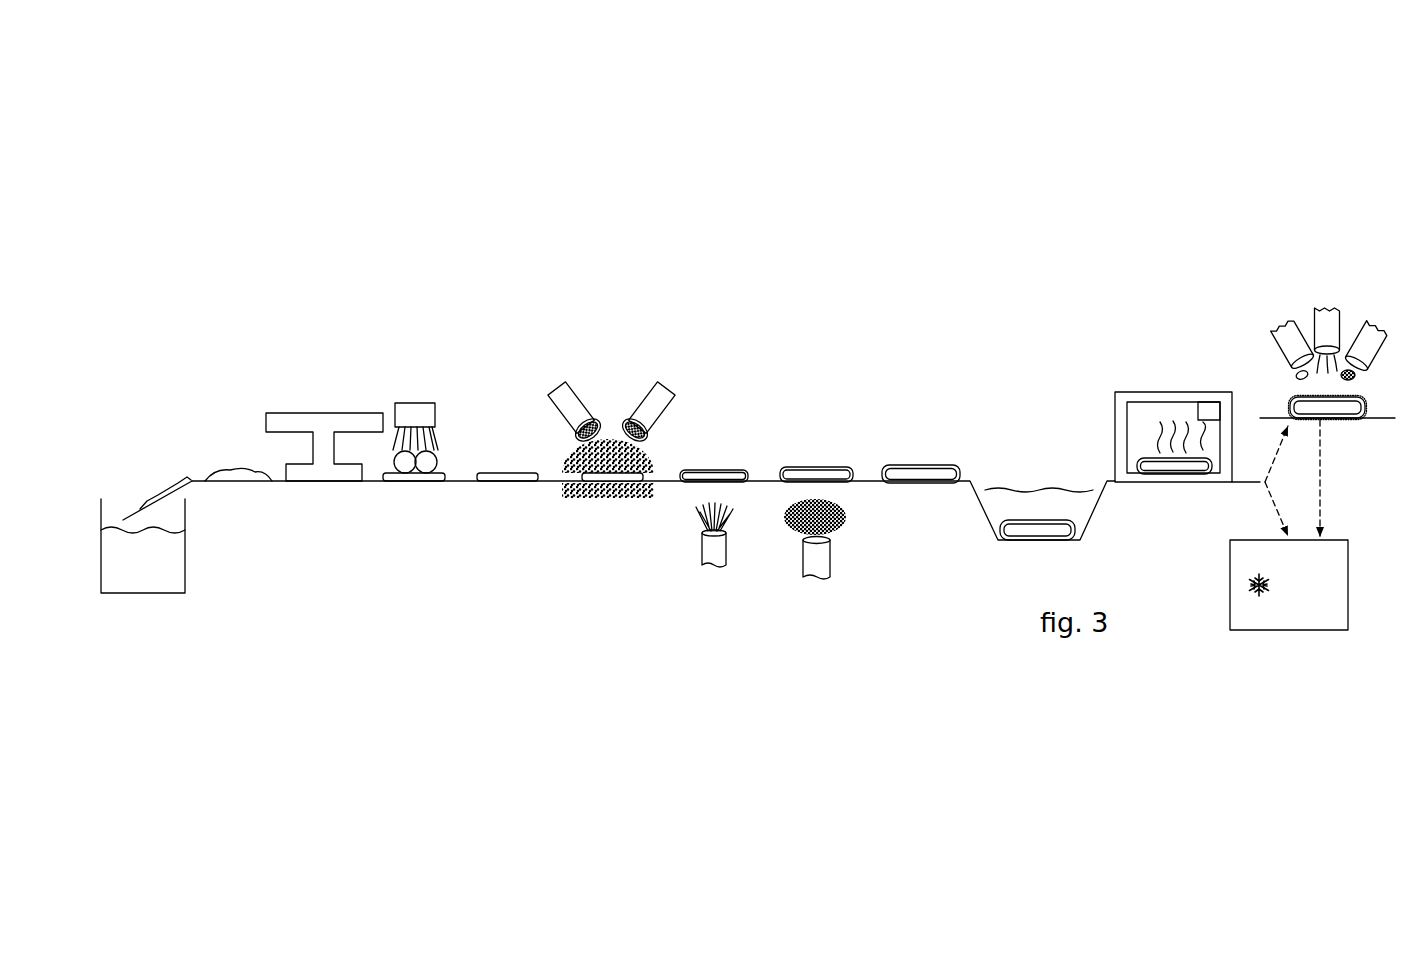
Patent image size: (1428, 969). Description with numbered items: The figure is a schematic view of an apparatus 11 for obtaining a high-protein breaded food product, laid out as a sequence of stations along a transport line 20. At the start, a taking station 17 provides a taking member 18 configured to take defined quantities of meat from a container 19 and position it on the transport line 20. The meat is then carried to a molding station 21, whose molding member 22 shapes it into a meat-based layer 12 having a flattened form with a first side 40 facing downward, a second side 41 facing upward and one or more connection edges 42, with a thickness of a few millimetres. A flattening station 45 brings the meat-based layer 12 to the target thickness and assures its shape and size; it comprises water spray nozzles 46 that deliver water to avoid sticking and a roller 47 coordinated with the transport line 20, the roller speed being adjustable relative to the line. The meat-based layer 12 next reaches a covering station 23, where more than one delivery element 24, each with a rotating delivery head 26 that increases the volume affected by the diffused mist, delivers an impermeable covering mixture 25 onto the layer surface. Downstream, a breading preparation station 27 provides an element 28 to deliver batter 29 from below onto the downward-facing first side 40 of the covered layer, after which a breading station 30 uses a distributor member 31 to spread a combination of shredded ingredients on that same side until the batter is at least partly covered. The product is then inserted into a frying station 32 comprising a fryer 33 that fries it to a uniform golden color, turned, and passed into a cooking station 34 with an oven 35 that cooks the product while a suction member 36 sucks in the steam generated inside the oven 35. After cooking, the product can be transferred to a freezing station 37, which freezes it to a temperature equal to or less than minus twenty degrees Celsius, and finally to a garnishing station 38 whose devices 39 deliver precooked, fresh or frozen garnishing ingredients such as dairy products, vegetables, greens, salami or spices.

The apparatus 11 is at (204, 368).
The meat-based layer 12 is at (422, 478).
The taking station 17 is at (124, 470).
The taking member 18 is at (173, 501).
The container 19 is at (185, 565).
The transport line 20 is at (277, 481).
The molding station 21 is at (333, 412).
The molding member 22 is at (326, 472).
The covering station 23 is at (614, 384).
The delivery element 24 is at (575, 405).
The impermeable covering mixture 25 is at (588, 490).
The rotating delivery head 26 is at (582, 436).
The breading preparation station 27 is at (718, 584).
The element to deliver batter 28 is at (719, 553).
The batter 29 is at (721, 519).
The breading station 30 is at (826, 601).
The distributor member 31 is at (820, 558).
The frying station 32 is at (1003, 469).
The fryer 33 is at (981, 511).
The cooking station 34 is at (1127, 376).
The oven 35 is at (1175, 389).
The suction member 36 is at (1207, 410).
The freezing station 37 is at (1270, 639).
The garnishing station 38 is at (1299, 301).
The devices to deliver the garnishing ingredients 39 is at (1287, 342).
The first side 40 is at (524, 484).
The second side 41 is at (493, 469).
The connection edges 42 is at (470, 476).
The flattening station 45 is at (403, 402).
The water spray nozzles 46 is at (425, 415).
The roller 47 is at (426, 462).